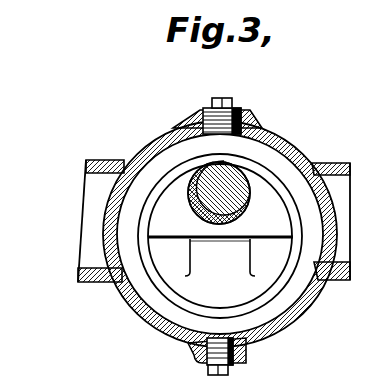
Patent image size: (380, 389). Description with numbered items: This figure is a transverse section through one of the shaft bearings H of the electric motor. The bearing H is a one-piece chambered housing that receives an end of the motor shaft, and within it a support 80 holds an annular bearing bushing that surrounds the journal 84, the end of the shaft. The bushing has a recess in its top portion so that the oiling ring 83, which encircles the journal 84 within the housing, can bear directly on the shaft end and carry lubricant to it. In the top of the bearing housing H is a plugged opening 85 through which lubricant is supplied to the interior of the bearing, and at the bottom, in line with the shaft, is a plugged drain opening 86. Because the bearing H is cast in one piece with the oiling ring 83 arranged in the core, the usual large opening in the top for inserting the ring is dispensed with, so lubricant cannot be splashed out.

The shaft bearing H is at (284, 329).
The support 80 is at (244, 212).
The oiling ring 83 is at (262, 284).
The journal 84 is at (229, 166).
The plugged opening 85 is at (246, 124).
The plugged drain opening 86 is at (199, 353).